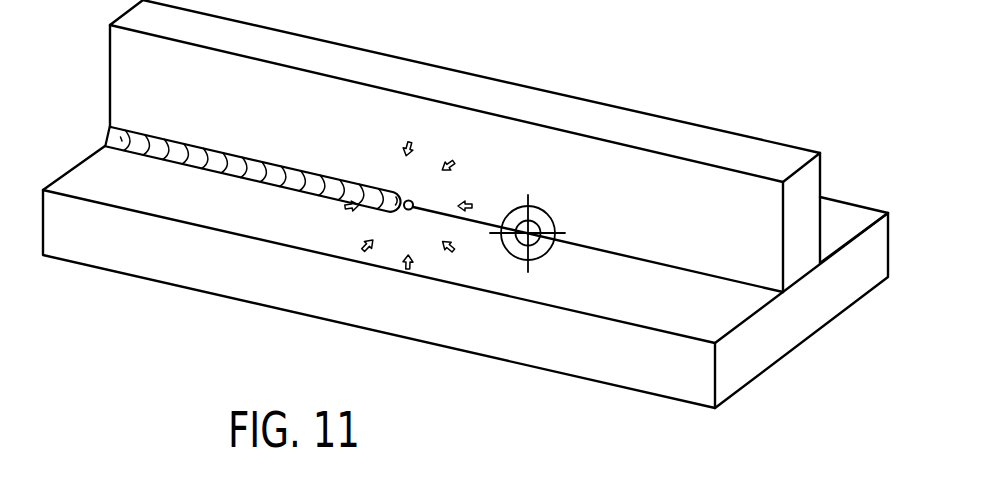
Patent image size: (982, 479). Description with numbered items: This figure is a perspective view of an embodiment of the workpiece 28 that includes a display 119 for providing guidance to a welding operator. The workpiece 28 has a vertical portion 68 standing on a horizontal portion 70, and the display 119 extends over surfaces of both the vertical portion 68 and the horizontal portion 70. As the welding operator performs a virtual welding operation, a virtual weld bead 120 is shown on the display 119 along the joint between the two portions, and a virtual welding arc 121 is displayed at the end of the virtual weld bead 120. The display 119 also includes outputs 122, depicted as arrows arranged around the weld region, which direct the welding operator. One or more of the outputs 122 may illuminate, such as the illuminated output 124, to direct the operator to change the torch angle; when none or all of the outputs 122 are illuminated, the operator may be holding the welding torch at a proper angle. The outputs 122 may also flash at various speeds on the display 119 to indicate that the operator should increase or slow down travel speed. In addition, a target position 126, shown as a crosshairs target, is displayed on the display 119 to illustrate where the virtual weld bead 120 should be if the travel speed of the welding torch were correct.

The workpiece 28 is at (465, 216).
The vertical portion 68 is at (642, 183).
The horizontal portion 70 is at (722, 310).
The display 119 is at (143, 95).
The virtual weld bead 120 is at (248, 170).
The virtual welding arc 121 is at (409, 210).
The outputs 122 is at (452, 160).
The output 124 is at (372, 163).
The target position 126 is at (547, 252).